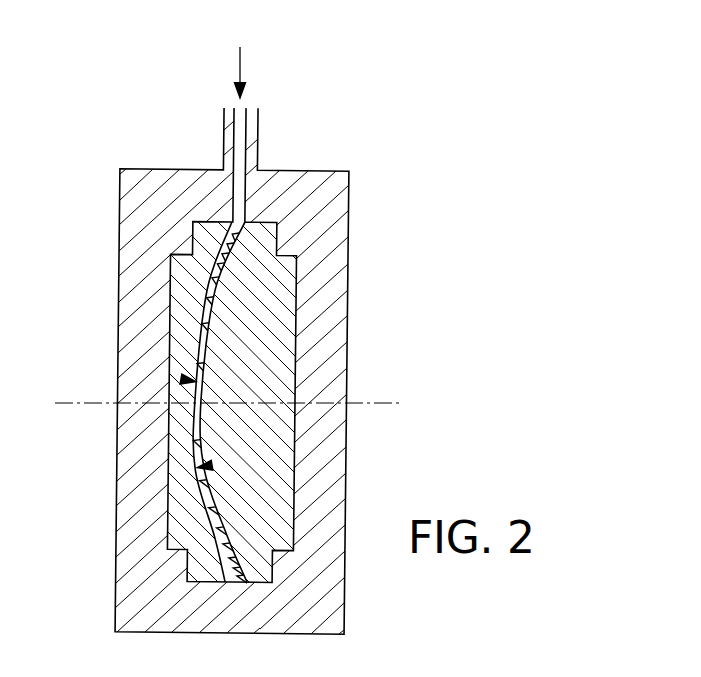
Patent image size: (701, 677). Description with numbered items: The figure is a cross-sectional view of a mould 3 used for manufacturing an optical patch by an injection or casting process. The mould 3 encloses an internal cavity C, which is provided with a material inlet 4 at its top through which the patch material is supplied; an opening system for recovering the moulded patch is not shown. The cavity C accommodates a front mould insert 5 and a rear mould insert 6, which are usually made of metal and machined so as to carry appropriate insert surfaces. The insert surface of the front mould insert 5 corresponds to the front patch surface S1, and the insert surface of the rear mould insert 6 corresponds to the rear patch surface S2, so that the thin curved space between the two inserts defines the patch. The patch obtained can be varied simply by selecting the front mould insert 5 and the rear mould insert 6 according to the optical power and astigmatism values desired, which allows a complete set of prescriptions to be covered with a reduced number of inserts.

The mould 3 is at (342, 202).
The material inlet 4 is at (240, 58).
The front mould insert 5 is at (185, 290).
The rear mould insert 6 is at (273, 287).
The internal cavity C is at (197, 350).
The front patch surface S1 is at (211, 465).
The rear patch surface S2 is at (182, 379).